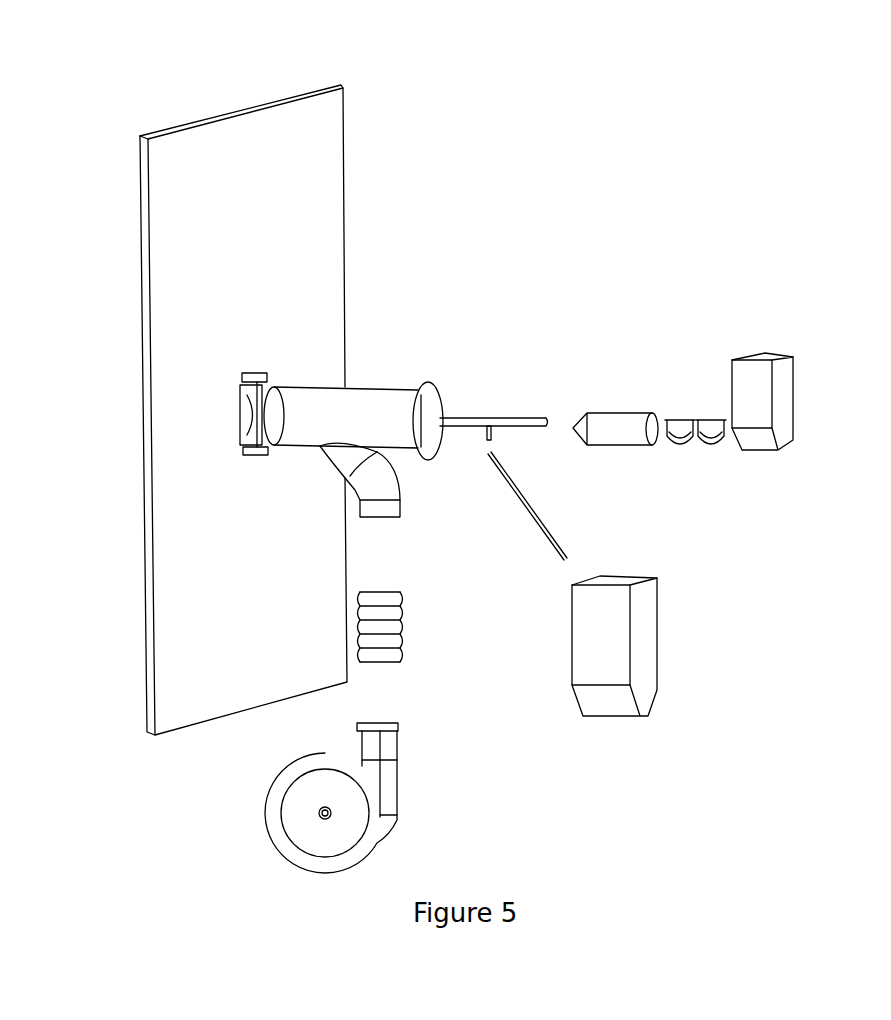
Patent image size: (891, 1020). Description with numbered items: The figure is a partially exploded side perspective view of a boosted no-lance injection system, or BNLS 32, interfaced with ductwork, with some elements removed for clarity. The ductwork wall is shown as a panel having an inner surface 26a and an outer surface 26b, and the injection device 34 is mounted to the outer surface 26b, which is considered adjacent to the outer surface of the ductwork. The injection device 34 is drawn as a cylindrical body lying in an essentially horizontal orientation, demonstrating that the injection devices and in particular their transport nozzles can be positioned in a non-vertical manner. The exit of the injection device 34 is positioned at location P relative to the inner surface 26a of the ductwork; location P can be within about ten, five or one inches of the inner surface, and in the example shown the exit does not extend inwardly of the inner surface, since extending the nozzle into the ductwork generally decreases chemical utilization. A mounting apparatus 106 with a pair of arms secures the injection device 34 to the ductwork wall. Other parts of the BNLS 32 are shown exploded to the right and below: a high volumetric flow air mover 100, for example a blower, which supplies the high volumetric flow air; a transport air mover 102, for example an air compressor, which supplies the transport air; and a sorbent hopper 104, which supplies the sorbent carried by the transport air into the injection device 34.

The inner surface 26a is at (140, 208).
The outer surface 26b is at (268, 248).
The boosted no-lance injection system (BNLS) 32 is at (636, 305).
The injection device 34 is at (368, 398).
The high volumetric flow air mover 100 is at (397, 800).
The transport air mover 102 is at (650, 635).
The sorbent hopper 104 is at (793, 390).
The mounting apparatus 106 is at (266, 376).
The location P is at (238, 418).